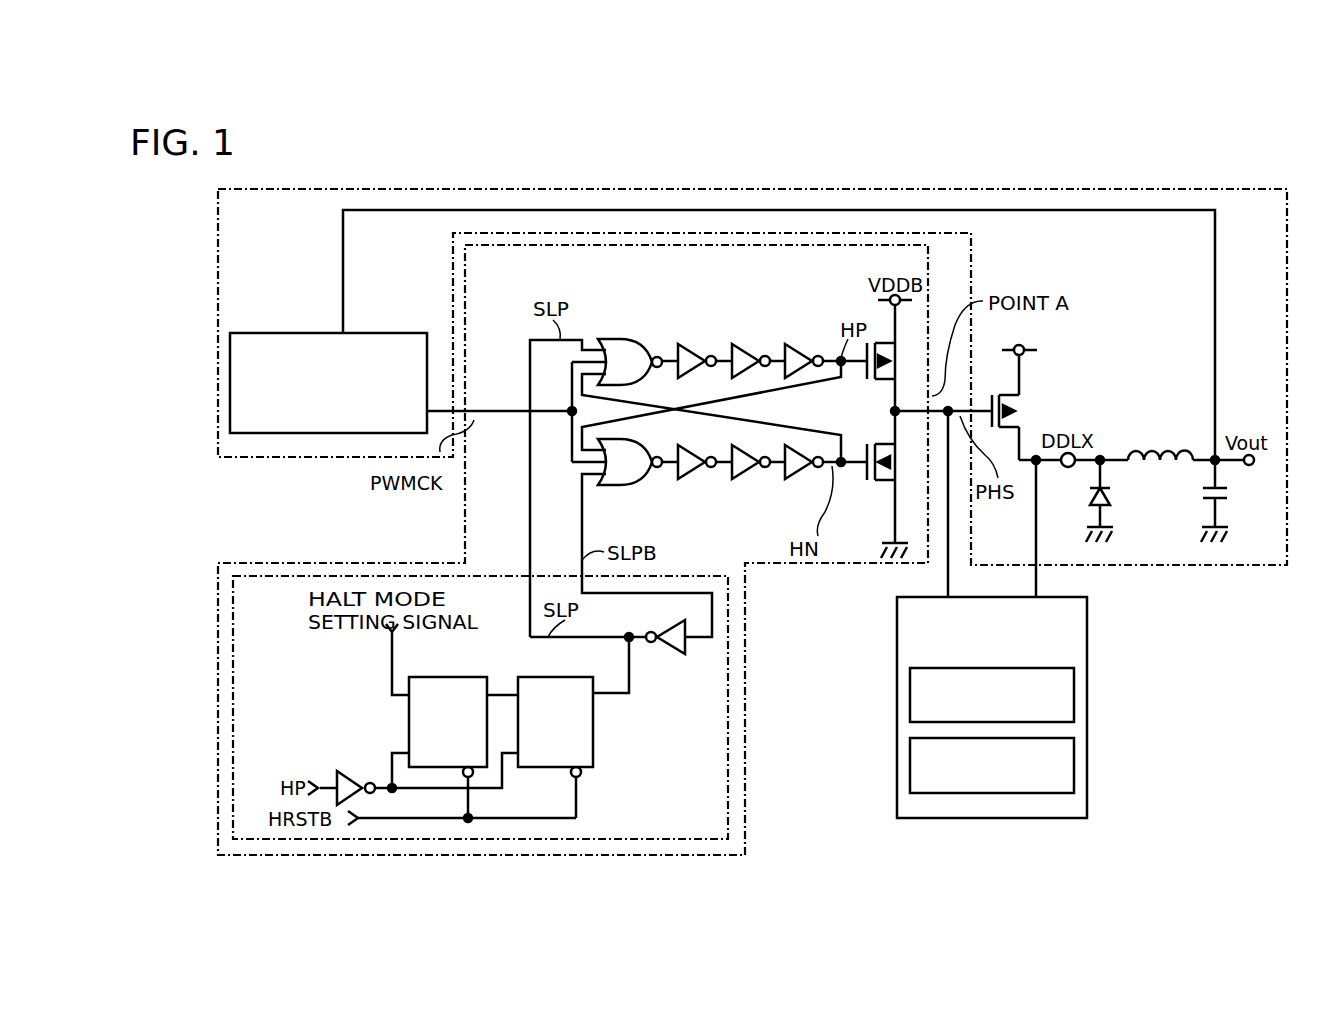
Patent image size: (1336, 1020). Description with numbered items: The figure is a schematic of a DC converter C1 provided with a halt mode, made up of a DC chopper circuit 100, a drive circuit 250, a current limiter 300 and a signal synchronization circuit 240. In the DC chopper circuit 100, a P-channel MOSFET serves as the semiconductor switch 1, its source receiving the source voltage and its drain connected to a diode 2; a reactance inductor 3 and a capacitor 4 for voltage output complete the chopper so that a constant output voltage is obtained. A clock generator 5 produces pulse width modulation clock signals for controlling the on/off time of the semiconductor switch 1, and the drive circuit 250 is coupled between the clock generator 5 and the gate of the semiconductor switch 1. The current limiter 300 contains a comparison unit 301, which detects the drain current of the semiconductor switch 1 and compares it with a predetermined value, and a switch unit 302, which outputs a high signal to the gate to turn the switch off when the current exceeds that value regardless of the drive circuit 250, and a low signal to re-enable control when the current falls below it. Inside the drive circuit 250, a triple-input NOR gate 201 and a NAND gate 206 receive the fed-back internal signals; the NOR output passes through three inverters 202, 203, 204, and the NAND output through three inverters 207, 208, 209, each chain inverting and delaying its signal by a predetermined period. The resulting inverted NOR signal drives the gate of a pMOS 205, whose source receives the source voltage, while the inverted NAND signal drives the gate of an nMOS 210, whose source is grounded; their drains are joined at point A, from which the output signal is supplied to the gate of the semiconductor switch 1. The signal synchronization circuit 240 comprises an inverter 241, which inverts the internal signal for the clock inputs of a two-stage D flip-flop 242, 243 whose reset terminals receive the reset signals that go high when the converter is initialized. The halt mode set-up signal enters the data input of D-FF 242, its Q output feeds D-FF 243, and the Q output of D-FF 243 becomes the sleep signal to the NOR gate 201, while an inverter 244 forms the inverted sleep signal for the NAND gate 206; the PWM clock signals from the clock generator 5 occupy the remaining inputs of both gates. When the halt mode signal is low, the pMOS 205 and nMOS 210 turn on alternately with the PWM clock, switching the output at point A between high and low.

The semiconductor switch 1 is at (1014, 416).
The diode 2 is at (1110, 495).
The reactance inductor 3 is at (1160, 448).
The capacitor 4 is at (1230, 495).
The clock generator 5 is at (410, 333).
The DC chopper circuit 100 is at (1272, 172).
The triple-input NOR gate 201 is at (618, 339).
The inverter 202 is at (694, 343).
The inverter 203 is at (748, 343).
The inverter 204 is at (801, 343).
The P-channel type MOSFET (pMOS) 205 is at (868, 384).
The NAND gate 206 is at (618, 486).
The inverter 207 is at (692, 480).
The inverter 208 is at (746, 480).
The inverter 209 is at (799, 480).
The N-channel type MOSFET (nMOS) 210 is at (868, 484).
The signal synchronization circuit 240 is at (729, 806).
The inverter 241 is at (352, 784).
The D-flip-flop 242 is at (409, 724).
The D-flip-flop 243 is at (593, 718).
The inverter 244 is at (672, 655).
The drive circuit 250 is at (465, 522).
The current limiter 300 is at (1021, 707).
The comparison unit 301 is at (992, 695).
The switch unit 302 is at (992, 765).
The DC converter C1 is at (758, 180).